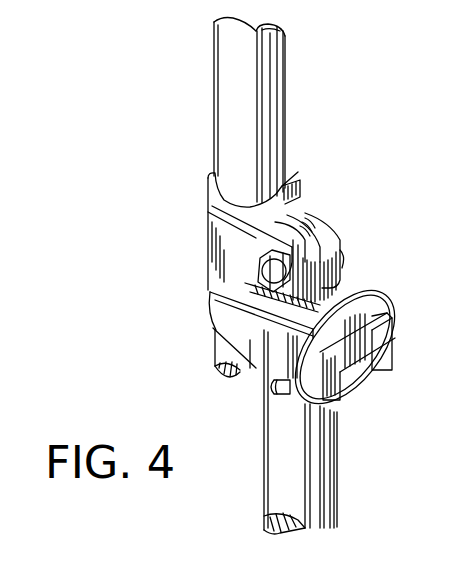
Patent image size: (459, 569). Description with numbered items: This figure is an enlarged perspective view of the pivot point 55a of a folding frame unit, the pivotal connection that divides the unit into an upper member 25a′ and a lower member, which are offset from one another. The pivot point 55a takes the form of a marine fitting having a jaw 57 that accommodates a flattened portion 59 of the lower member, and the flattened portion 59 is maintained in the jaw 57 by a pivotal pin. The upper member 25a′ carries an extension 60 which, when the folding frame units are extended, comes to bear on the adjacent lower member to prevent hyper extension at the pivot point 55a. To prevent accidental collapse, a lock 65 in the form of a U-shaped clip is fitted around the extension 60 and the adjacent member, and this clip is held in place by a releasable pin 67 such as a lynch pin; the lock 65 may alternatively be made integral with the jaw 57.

The upper member 25a′ is at (272, 78).
The flattened portion 59 is at (300, 228).
The jaw 57 is at (330, 222).
The pivot point 55a is at (262, 285).
The lock 65 is at (223, 312).
The extension 60 is at (225, 352).
The releasable pin 67 is at (286, 402).